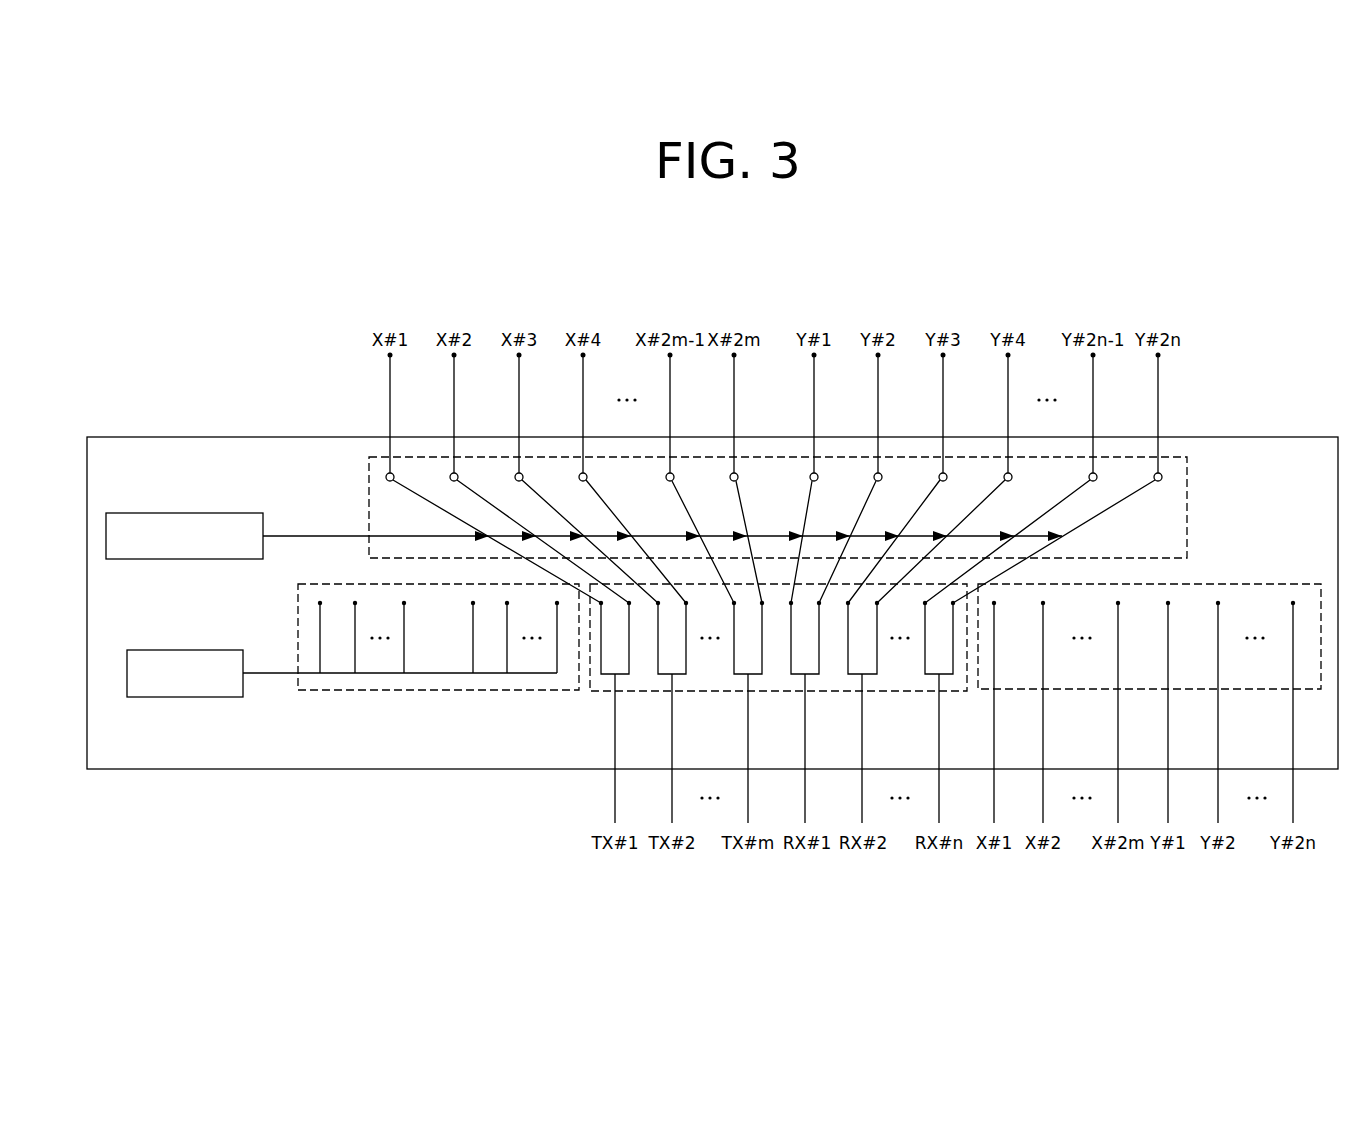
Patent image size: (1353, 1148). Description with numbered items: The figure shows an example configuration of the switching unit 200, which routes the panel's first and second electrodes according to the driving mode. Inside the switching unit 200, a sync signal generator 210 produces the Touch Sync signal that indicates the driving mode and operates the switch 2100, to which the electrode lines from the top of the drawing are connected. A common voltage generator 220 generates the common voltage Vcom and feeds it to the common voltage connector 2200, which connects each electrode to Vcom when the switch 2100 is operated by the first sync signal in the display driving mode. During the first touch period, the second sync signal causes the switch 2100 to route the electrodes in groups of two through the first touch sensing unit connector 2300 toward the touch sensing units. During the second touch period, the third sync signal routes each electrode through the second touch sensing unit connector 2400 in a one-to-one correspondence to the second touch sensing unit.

The switching unit 200 is at (195, 436).
The sync signal generator 210 is at (267, 522).
The common voltage generator 220 is at (224, 650).
The switch 2100 is at (1188, 492).
The common voltage connector 2200 is at (360, 691).
The first touch sensing unit connector 2300 is at (640, 693).
The second touch sensing unit connector 2400 is at (1252, 584).